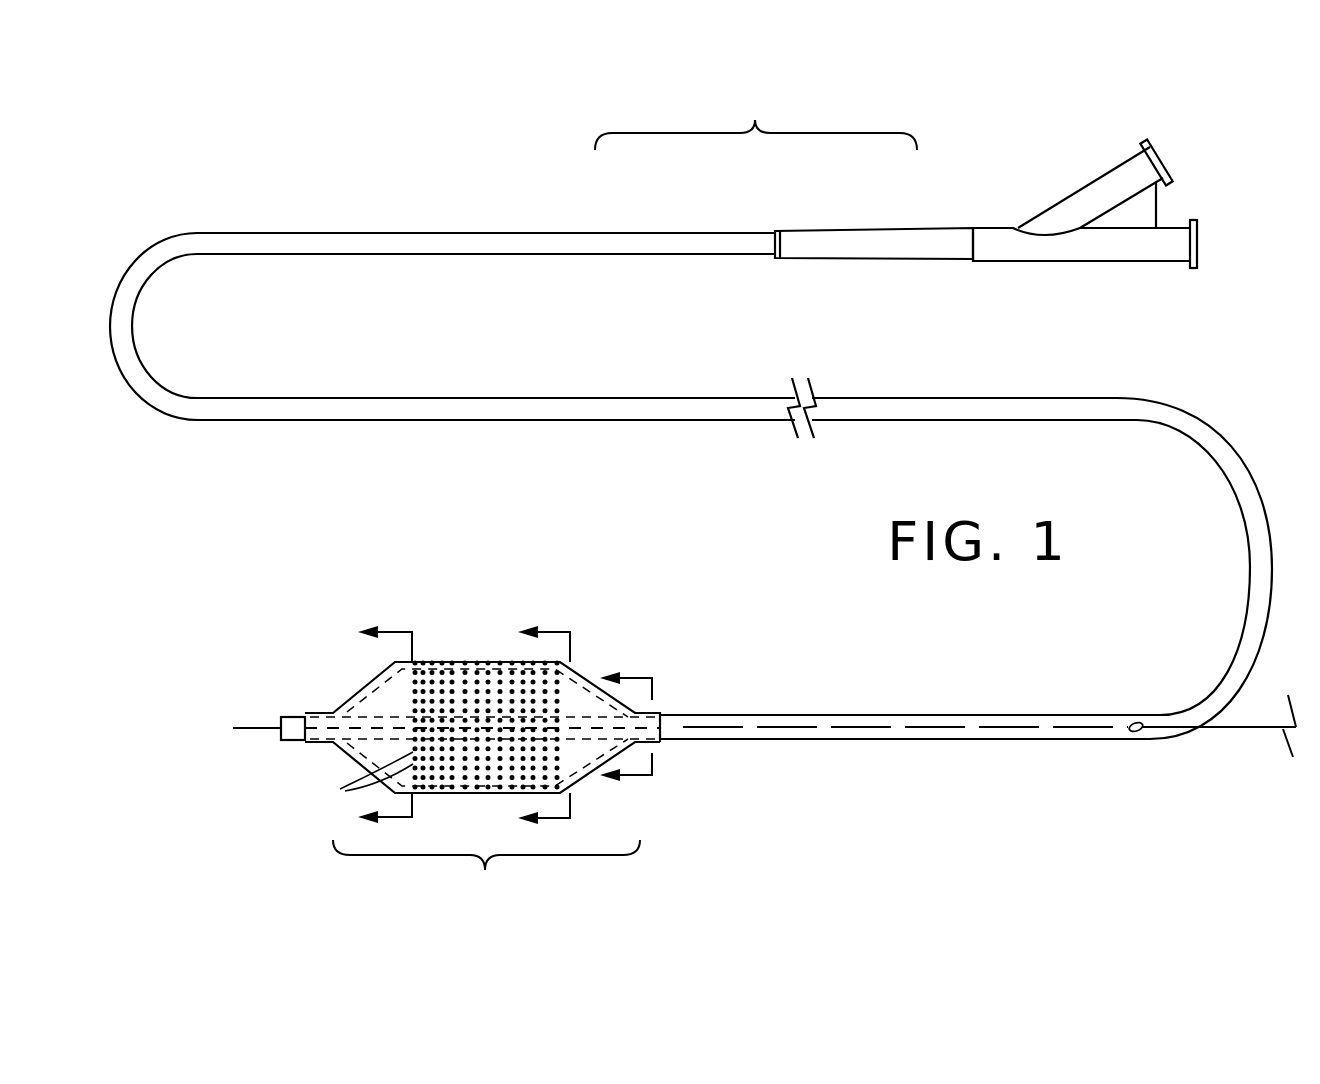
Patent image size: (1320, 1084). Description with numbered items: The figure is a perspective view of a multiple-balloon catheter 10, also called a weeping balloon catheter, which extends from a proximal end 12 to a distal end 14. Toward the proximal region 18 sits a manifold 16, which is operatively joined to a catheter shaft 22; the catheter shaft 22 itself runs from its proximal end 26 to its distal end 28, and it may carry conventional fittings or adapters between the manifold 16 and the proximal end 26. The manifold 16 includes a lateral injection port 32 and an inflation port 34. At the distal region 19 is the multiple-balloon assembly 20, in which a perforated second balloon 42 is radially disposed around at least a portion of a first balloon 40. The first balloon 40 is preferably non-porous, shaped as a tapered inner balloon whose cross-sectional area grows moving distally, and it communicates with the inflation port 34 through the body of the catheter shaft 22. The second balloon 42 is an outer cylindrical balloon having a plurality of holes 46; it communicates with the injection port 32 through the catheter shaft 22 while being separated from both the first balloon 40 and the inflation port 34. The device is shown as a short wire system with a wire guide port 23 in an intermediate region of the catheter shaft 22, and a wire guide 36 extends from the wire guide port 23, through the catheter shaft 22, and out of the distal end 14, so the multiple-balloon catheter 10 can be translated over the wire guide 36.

The multiple-balloon catheter 10 is at (533, 173).
The proximal end 12 is at (1194, 268).
The distal end 14 is at (292, 716).
The manifold 16 is at (982, 178).
The proximal region 18 is at (756, 118).
The distal region 19 is at (486, 871).
The multiple-balloon assembly 20 is at (508, 624).
The catheter shaft 22 is at (746, 398).
The wire guide port 23 is at (1140, 731).
The proximal end of catheter shaft 26 is at (764, 231).
The distal end of catheter shaft 28 is at (670, 733).
The lateral injection port 32 is at (1133, 165).
The inflation port 34 is at (1123, 258).
The wire guide 36 is at (245, 727).
The first balloon 40 is at (375, 672).
The second balloon 42 is at (490, 662).
The holes 46 is at (359, 777).